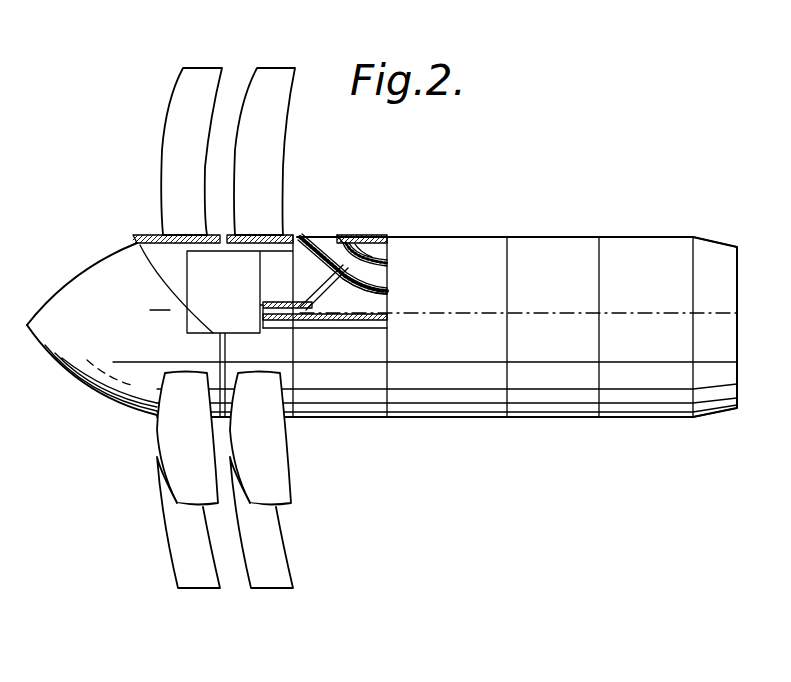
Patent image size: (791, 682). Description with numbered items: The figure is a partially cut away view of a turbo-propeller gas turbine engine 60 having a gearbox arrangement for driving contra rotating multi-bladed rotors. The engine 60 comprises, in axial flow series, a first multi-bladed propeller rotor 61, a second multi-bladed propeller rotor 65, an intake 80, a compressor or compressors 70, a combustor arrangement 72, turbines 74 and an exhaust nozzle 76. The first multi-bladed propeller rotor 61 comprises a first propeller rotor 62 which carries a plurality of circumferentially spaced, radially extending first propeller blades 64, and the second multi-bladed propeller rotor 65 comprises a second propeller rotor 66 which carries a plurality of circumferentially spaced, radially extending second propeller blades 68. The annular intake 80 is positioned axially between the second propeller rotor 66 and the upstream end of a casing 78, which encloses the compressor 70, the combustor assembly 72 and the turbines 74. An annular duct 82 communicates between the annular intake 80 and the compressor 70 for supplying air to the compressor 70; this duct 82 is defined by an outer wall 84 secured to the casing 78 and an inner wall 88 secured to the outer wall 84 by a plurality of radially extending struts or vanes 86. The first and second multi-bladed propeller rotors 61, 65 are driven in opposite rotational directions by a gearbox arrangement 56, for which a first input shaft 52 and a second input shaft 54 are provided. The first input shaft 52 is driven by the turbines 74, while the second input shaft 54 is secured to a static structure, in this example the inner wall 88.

The first input shaft 52 is at (337, 315).
The second input shaft 54 is at (310, 307).
The gearbox arrangement 56 is at (217, 296).
The turbo-propeller gas turbine engine 60 is at (436, 440).
The first multi-bladed propeller rotor 61 is at (153, 151).
The first propeller rotor 62 is at (162, 237).
The first propeller blades 64 is at (182, 98).
The second multi-bladed propeller rotor 65 is at (300, 151).
The second propeller rotor 66 is at (318, 242).
The second propeller blades 68 is at (268, 112).
The compressor 70 is at (473, 245).
The combustor arrangement 72 is at (553, 248).
The turbines 74 is at (640, 248).
The exhaust nozzle 76 is at (710, 257).
The casing 78 is at (362, 244).
The intake 80 is at (358, 240).
The annular duct 82 is at (382, 279).
The outer wall 84 is at (372, 252).
The struts or vanes 86 is at (383, 265).
The inner wall 88 is at (330, 250).